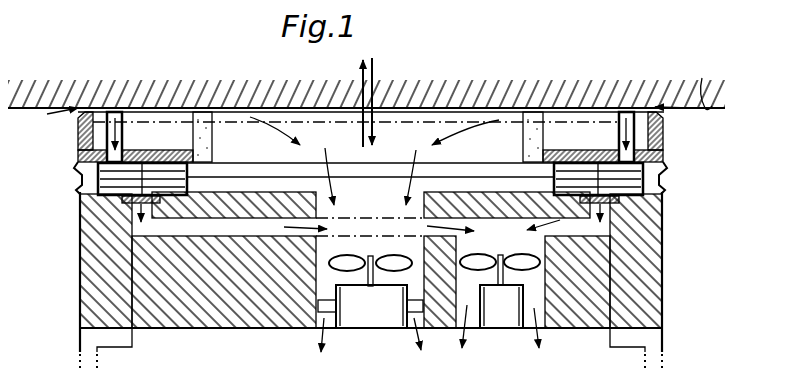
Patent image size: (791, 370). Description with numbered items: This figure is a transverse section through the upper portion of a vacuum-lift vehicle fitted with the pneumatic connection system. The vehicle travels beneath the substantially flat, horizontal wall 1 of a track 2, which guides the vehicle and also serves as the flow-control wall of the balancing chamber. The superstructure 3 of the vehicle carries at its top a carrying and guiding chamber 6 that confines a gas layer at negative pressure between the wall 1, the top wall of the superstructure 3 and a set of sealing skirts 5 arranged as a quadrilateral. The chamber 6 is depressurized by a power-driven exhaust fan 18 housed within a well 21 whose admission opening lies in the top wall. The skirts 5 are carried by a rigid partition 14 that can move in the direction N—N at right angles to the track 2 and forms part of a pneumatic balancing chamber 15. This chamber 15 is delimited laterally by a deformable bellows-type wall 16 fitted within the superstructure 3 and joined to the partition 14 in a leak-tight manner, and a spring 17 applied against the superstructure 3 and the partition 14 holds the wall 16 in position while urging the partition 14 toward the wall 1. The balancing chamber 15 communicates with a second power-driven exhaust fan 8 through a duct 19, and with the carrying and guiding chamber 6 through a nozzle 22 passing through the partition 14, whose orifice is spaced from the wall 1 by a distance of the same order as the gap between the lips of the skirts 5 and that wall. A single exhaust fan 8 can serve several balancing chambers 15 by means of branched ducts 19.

The wall 1 is at (379, 85).
The track 2 is at (611, 97).
The superstructure 3 is at (645, 274).
The sealing skirts 5 is at (80, 132).
The carrying and guiding chamber 6 is at (389, 147).
The power-driven exhaust fan 8 is at (499, 314).
The partition 14 is at (178, 153).
The pneumatic balancing chamber 15 is at (138, 172).
The deformable bellows-type wall 16 is at (198, 177).
The spring 17 is at (103, 202).
The power-driven exhaust fan 18 is at (379, 320).
The duct 19 is at (202, 228).
The well 21 is at (400, 278).
The nozzle 22 is at (88, 118).